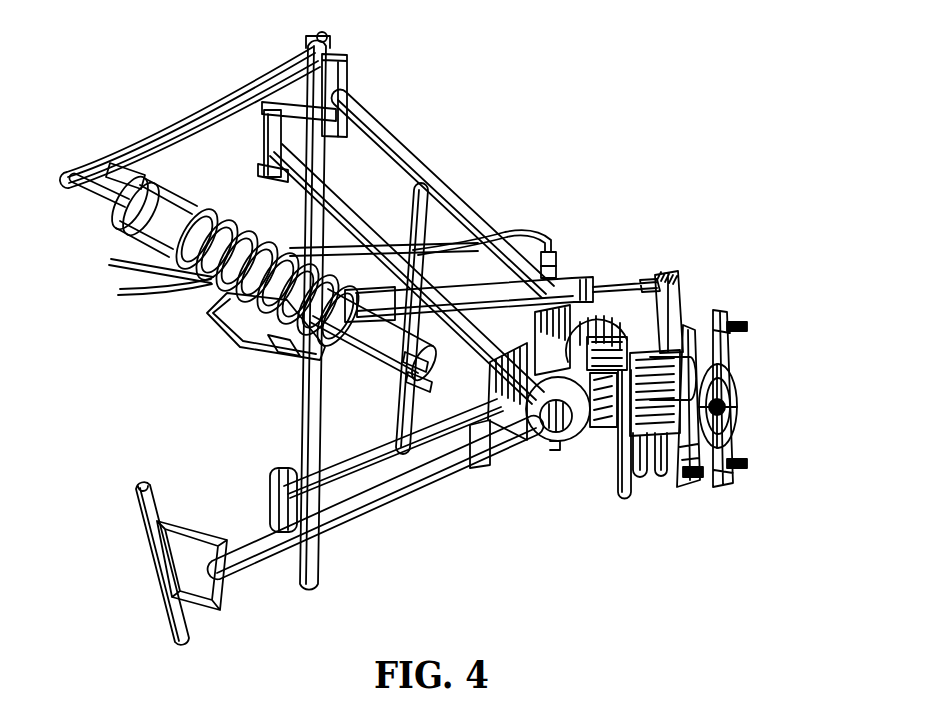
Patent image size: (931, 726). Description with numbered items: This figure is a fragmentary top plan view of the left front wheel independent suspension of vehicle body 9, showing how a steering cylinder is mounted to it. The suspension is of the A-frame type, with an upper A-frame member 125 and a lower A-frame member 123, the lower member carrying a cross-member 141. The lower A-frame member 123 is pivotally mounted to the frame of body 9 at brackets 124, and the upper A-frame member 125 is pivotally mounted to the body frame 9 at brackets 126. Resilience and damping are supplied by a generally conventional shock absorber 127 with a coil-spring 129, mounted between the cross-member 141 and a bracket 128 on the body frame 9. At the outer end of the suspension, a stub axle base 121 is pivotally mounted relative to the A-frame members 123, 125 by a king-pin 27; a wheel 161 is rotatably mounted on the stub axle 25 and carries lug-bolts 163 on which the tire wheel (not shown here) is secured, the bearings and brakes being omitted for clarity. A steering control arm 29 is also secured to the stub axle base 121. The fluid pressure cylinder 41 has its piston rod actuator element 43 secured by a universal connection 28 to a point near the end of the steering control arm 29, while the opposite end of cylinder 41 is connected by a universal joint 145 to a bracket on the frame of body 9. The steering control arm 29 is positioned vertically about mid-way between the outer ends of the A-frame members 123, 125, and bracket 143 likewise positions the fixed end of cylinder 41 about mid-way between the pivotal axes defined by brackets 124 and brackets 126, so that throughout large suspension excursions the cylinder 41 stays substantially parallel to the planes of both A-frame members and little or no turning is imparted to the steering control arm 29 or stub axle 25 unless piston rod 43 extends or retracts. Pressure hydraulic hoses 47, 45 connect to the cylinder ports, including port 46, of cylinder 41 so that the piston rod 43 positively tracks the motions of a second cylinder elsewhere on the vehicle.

The vehicle body 9 is at (325, 443).
The stub axle 25 is at (727, 420).
The king-pin 27 is at (556, 447).
The universal connection 28 is at (657, 275).
The steering control arm 29 is at (682, 322).
The fluid pressure cylinder 41 is at (483, 281).
The piston rod actuator element 43 is at (635, 253).
The pressure hydraulic hose 45 is at (163, 302).
The cylinder port 46 is at (567, 268).
The pressure hydraulic hose 47 is at (497, 227).
The stub axle base 121 is at (623, 493).
The lower A-frame member 123 is at (393, 140).
The brackets 124 is at (353, 88).
The upper A-frame member 125 is at (347, 521).
The brackets 126 is at (263, 146).
The shock absorber 127 is at (340, 366).
The bracket 128 is at (112, 217).
The coil-spring 129 is at (268, 212).
The cross-member 141 is at (420, 397).
The bracket 143 is at (287, 360).
The universal joint 145 is at (240, 340).
The wheel 161 is at (727, 367).
The lug-bolts 163 is at (740, 470).